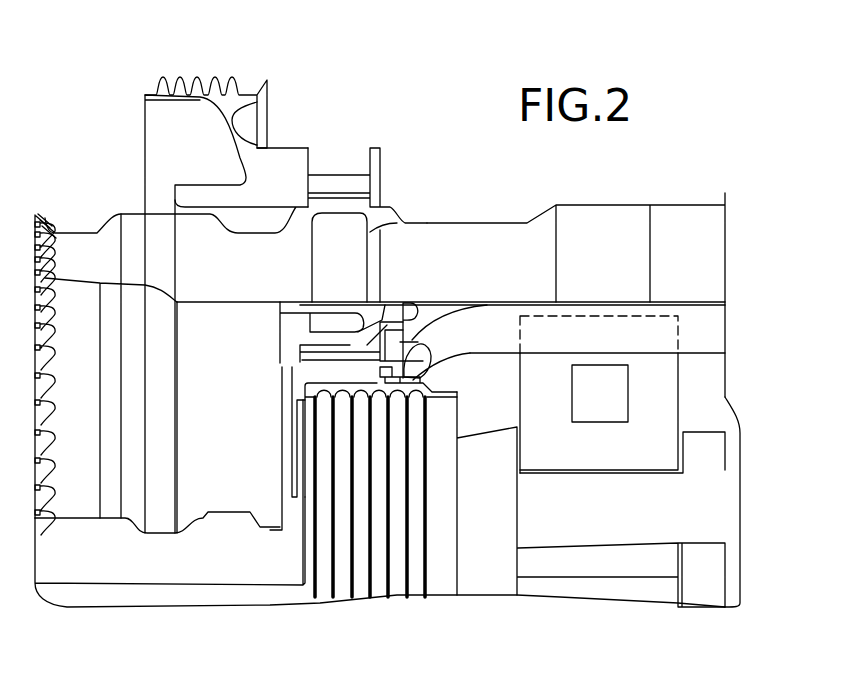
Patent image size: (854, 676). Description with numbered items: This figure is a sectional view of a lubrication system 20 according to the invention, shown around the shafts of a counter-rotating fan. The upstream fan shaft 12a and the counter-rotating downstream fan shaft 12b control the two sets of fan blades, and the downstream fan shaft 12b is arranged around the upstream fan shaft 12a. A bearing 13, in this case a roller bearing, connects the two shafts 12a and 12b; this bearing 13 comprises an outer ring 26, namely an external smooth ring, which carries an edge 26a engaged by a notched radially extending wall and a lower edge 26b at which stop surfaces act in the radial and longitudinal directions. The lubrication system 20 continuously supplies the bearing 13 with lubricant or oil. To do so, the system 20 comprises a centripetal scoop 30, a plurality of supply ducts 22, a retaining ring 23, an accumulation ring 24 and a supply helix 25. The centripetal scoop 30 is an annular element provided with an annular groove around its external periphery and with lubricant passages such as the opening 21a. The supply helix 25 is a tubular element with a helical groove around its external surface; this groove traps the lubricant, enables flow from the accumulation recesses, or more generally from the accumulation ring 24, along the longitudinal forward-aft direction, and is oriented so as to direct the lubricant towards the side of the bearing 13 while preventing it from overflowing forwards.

The lubrication system 20 is at (440, 82).
The centripetal scoop 30 is at (260, 83).
The opening 21a is at (347, 174).
The supply ducts 22 is at (370, 232).
The retaining ring 23 is at (377, 300).
The downstream fan shaft 12b is at (618, 218).
The accumulation ring 24 is at (290, 364).
The supply helix 25 is at (337, 590).
The edge 26a is at (403, 378).
The lower edge 26b is at (425, 348).
The outer ring 26 is at (713, 330).
The bearing 13 is at (668, 448).
The upstream fan shaft 12a is at (722, 510).